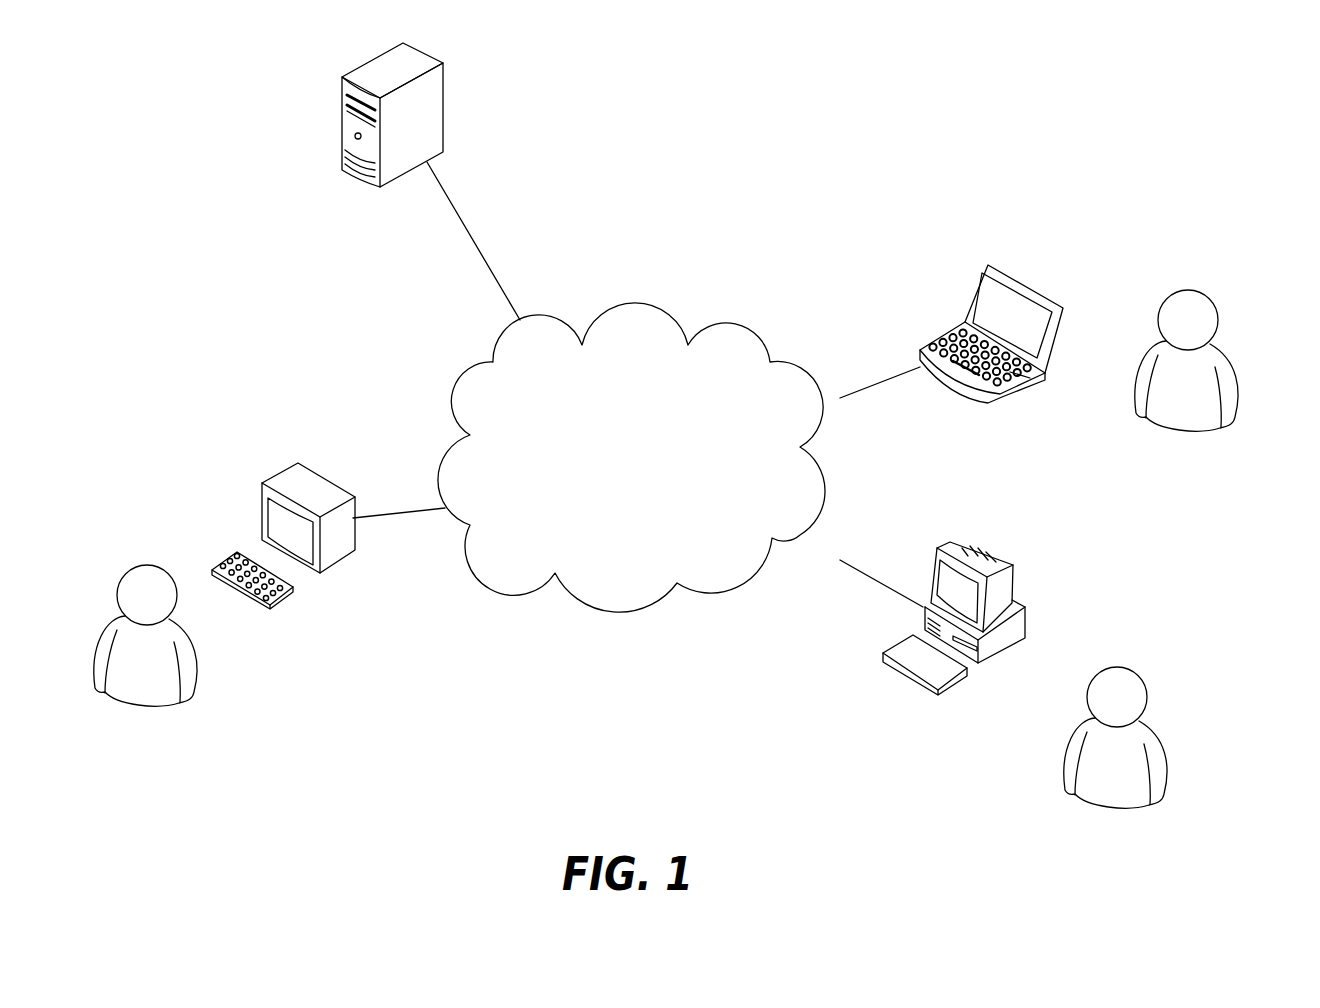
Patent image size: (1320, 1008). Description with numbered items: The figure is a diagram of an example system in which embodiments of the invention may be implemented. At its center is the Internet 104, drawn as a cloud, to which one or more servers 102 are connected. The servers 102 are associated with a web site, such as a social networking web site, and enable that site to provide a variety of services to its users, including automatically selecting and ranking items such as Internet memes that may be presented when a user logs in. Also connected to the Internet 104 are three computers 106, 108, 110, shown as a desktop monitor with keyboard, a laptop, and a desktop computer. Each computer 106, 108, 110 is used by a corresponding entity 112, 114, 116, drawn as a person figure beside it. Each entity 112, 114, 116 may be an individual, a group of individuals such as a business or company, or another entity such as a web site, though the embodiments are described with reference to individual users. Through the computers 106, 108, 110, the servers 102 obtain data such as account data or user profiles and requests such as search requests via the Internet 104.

The server 102 is at (443, 110).
The Internet 104 is at (651, 481).
The computer 106 is at (320, 473).
The computer 108 is at (1017, 280).
The computer 110 is at (1010, 565).
The entity 112 is at (160, 563).
The entity 114 is at (1217, 315).
The entity 116 is at (1142, 682).